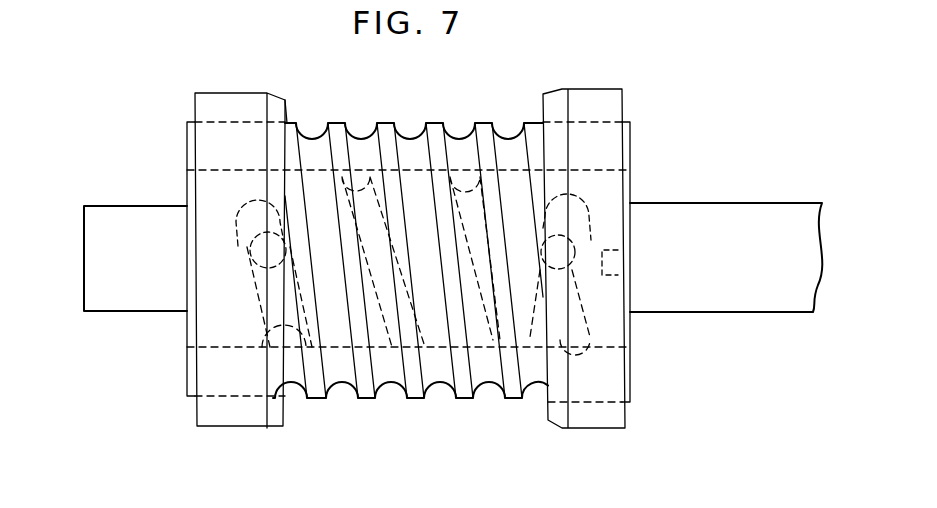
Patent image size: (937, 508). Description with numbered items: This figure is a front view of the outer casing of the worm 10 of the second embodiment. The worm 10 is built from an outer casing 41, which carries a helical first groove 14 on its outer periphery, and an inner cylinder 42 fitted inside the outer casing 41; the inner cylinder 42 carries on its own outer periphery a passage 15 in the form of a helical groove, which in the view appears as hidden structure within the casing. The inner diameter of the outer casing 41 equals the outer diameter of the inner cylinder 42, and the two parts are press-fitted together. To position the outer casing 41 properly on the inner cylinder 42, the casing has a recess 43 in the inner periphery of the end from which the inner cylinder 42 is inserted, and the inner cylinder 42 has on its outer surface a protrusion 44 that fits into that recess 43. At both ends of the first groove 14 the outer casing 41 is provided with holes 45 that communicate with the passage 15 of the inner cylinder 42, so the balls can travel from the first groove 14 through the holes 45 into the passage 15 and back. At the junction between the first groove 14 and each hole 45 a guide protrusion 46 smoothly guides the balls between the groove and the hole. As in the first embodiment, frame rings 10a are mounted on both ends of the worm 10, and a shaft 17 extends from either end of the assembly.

The worm 10 is at (485, 422).
The frame rings 10a is at (234, 100).
The first groove 14 is at (386, 386).
The passage 15 is at (326, 386).
The screw shaft 17 is at (727, 210).
The outer casing 41 is at (289, 120).
The inner cylinder 42 is at (411, 170).
The recess 43 is at (610, 256).
The protrusion 44 is at (628, 312).
The holes 45 is at (287, 252).
The guide protrusion 46 is at (245, 247).